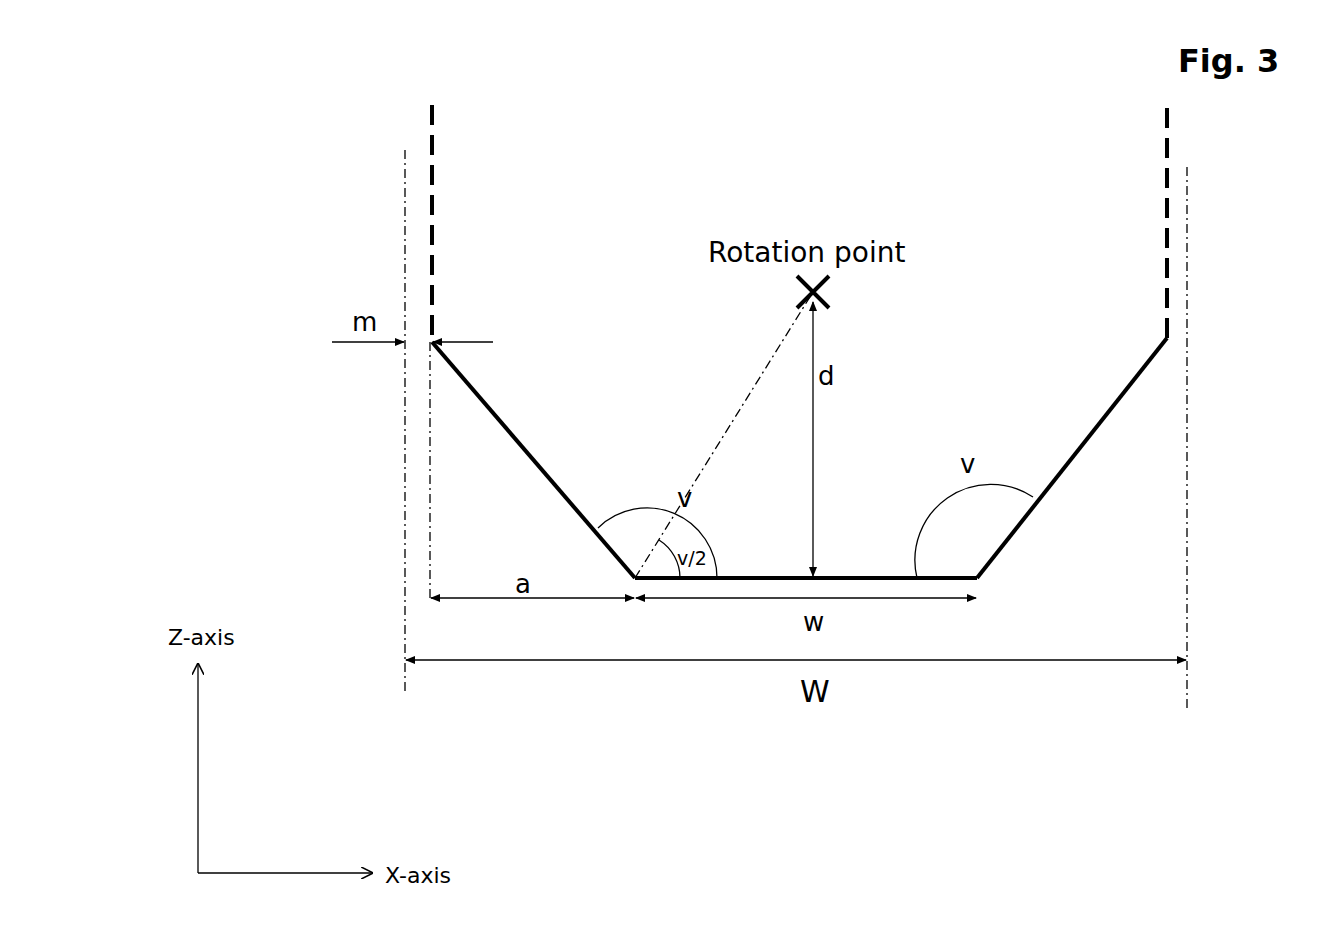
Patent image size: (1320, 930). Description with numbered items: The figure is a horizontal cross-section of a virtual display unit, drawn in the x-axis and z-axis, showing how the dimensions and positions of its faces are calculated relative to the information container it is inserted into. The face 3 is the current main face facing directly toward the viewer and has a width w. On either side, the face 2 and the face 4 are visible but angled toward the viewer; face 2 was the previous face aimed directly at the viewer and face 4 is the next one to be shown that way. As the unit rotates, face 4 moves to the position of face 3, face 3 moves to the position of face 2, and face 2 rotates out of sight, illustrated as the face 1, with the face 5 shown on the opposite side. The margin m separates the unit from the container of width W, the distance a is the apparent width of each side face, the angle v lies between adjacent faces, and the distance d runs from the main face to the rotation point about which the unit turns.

The face 1 is at (434, 223).
The face 2 is at (533, 460).
The face 3 is at (806, 577).
The face 4 is at (1072, 458).
The face 5 is at (1158, 220).